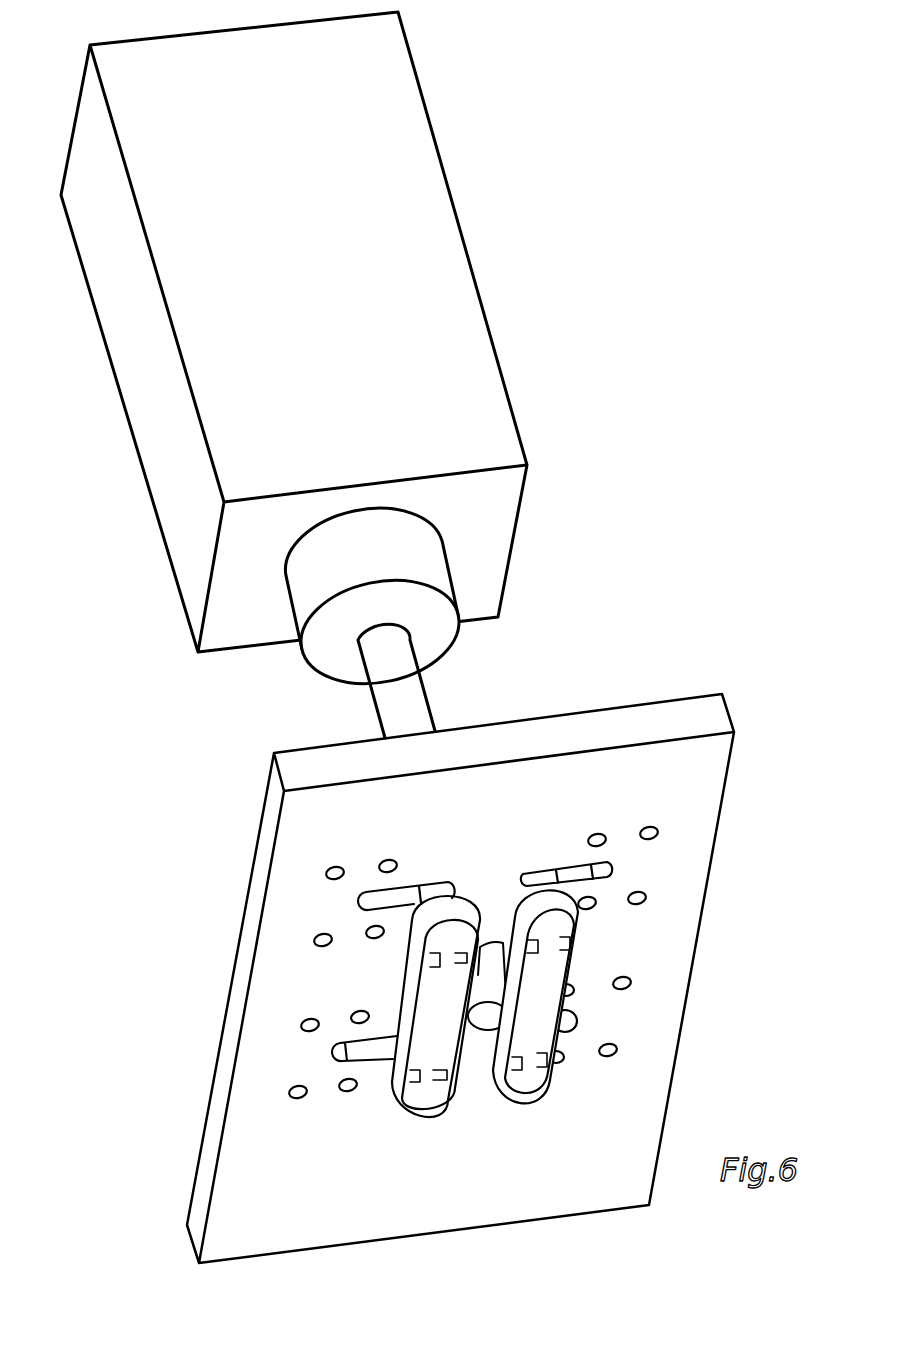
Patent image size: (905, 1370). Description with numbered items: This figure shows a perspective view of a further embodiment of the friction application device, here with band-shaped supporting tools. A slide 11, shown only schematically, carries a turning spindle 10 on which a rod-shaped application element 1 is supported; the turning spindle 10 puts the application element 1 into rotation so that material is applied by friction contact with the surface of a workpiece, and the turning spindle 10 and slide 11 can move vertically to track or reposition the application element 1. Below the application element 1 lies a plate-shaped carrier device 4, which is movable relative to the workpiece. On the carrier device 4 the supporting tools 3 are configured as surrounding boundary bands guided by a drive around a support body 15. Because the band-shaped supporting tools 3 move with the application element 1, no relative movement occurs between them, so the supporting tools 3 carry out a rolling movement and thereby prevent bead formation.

The slide 11 is at (448, 310).
The turning spindle 10 is at (417, 568).
The application element 1 is at (410, 700).
The carrier device 4 is at (292, 851).
The supporting tools 3 is at (410, 988).
The support body 15 is at (545, 1005).